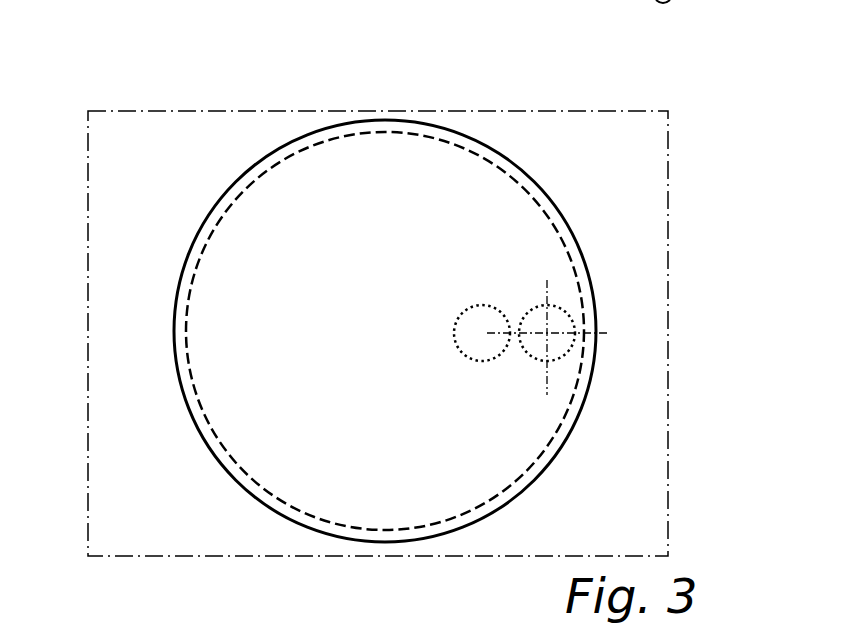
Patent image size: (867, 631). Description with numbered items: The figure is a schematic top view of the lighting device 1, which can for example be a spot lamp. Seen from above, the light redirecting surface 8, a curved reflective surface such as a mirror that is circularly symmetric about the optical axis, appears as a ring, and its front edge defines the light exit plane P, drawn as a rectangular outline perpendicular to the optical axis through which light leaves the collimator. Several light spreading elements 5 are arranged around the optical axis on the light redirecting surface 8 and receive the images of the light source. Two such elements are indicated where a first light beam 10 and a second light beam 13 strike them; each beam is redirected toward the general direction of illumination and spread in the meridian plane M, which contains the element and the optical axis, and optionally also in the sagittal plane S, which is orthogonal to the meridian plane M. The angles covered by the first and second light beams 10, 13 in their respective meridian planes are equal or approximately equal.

The lighting device 1 is at (78, 78).
The light exit plane P is at (645, 145).
The light redirecting surface 8 is at (478, 140).
The light spreading elements 5 is at (207, 363).
The second light beam 13 is at (455, 325).
The first light beam 10 is at (573, 318).
The sagittal plane S is at (553, 295).
The meridian plane M is at (580, 336).